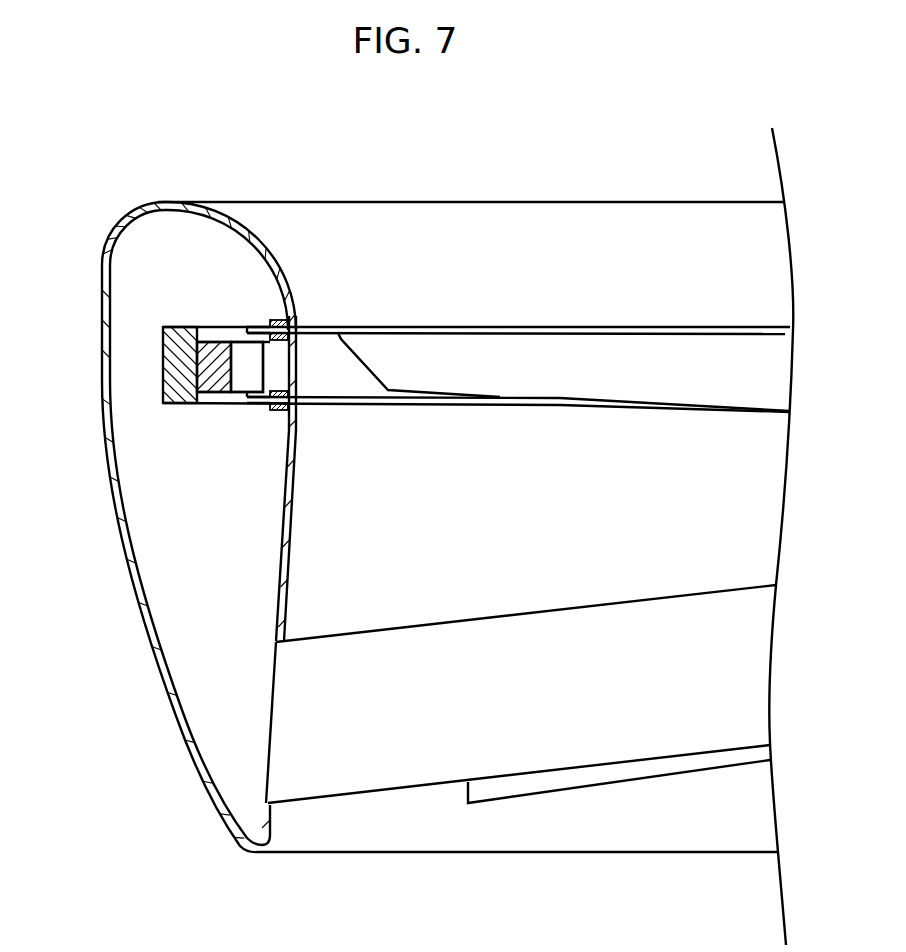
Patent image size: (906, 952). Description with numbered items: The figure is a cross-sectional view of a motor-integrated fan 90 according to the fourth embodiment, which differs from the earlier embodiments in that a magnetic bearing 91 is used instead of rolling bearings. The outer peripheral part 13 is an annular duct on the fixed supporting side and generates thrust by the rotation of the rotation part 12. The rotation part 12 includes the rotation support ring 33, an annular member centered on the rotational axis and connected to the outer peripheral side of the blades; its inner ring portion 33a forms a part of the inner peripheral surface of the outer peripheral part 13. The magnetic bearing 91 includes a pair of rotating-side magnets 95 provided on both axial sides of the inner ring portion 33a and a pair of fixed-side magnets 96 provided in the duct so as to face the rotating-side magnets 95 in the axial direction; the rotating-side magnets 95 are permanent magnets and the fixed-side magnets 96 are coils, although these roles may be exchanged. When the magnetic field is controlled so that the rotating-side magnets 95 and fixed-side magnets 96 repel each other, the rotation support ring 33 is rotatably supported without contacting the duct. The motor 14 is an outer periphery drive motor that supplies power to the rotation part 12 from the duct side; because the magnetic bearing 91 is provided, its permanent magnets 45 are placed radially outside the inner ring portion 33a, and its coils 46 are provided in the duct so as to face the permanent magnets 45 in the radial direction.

The motor-integrated fan 90 is at (523, 200).
The outer peripheral part 13 is at (98, 282).
The rotation part 12 is at (563, 322).
The motor 14 is at (192, 318).
The coils 46 is at (211, 380).
The permanent magnets 45 is at (237, 380).
The rotation support ring 33 is at (253, 406).
The inner ring portion 33a is at (282, 372).
The magnetic bearing 91 is at (260, 316).
The fixed-side magnets 96 is at (300, 345).
The rotating-side magnets 95 is at (296, 354).